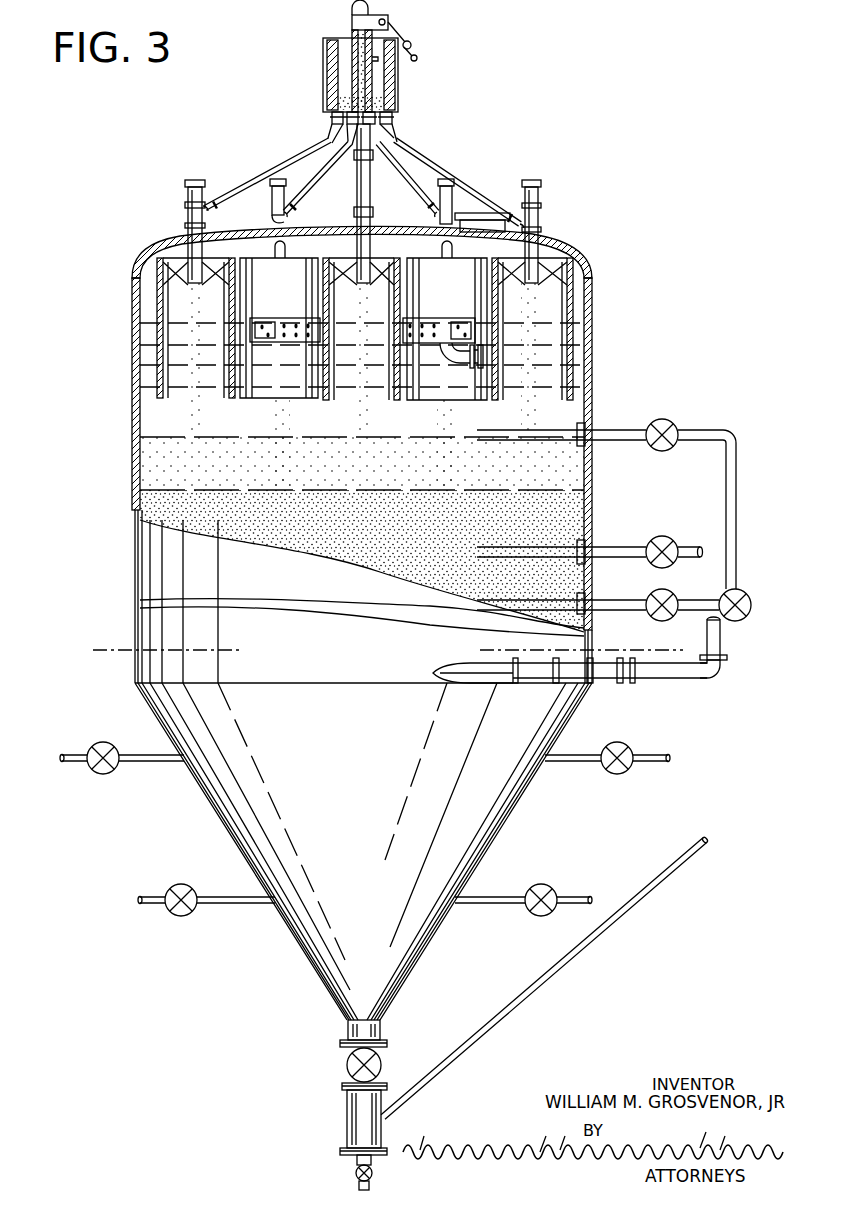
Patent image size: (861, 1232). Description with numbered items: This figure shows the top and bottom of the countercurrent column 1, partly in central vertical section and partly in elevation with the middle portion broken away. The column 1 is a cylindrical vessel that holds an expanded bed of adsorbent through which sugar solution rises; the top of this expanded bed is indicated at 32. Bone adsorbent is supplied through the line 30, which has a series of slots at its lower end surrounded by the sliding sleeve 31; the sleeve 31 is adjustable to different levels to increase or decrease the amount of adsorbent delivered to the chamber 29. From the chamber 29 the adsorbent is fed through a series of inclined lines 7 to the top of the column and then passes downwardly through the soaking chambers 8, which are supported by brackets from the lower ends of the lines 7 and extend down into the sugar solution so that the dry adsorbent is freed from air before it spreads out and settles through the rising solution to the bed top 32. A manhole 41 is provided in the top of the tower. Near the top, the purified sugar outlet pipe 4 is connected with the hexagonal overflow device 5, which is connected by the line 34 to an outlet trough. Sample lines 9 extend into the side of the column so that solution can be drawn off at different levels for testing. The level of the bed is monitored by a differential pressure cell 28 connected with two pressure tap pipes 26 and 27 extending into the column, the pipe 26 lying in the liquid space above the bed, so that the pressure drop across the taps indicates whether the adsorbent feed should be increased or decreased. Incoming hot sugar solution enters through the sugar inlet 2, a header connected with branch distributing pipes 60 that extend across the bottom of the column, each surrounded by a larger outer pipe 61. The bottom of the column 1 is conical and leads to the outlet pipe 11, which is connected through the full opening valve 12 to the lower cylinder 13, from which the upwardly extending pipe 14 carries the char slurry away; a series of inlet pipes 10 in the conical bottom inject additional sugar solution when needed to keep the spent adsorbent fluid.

The countercurrent column 1 is at (132, 542).
The sugar inlet 2 is at (717, 640).
The purified sugar outlet pipe 4 is at (99, 648).
The overflow device 5 is at (277, 316).
The lines 7 is at (277, 163).
The soaking chambers 8 is at (132, 270).
The sample lines 9 is at (623, 550).
The inlet pipes 10 is at (138, 756).
The outlet pipe 11 is at (349, 1030).
The full opening valve 12 is at (348, 1070).
The discharge cylinder 13 is at (347, 1118).
The pipe 14 is at (600, 935).
The pressure tap pipe 26 is at (633, 432).
The pressure tap pipe 27 is at (630, 603).
The differential pressure cell 28 is at (743, 592).
The chamber 29 is at (323, 69).
The line 30 is at (352, 34).
The sliding sleeve 31 is at (373, 74).
The top of the expanded bed 32 is at (572, 503).
The line 34 is at (470, 361).
The manhole 41 is at (485, 216).
The distributing pipes 60 is at (672, 680).
The outer pipe 61 is at (473, 678).